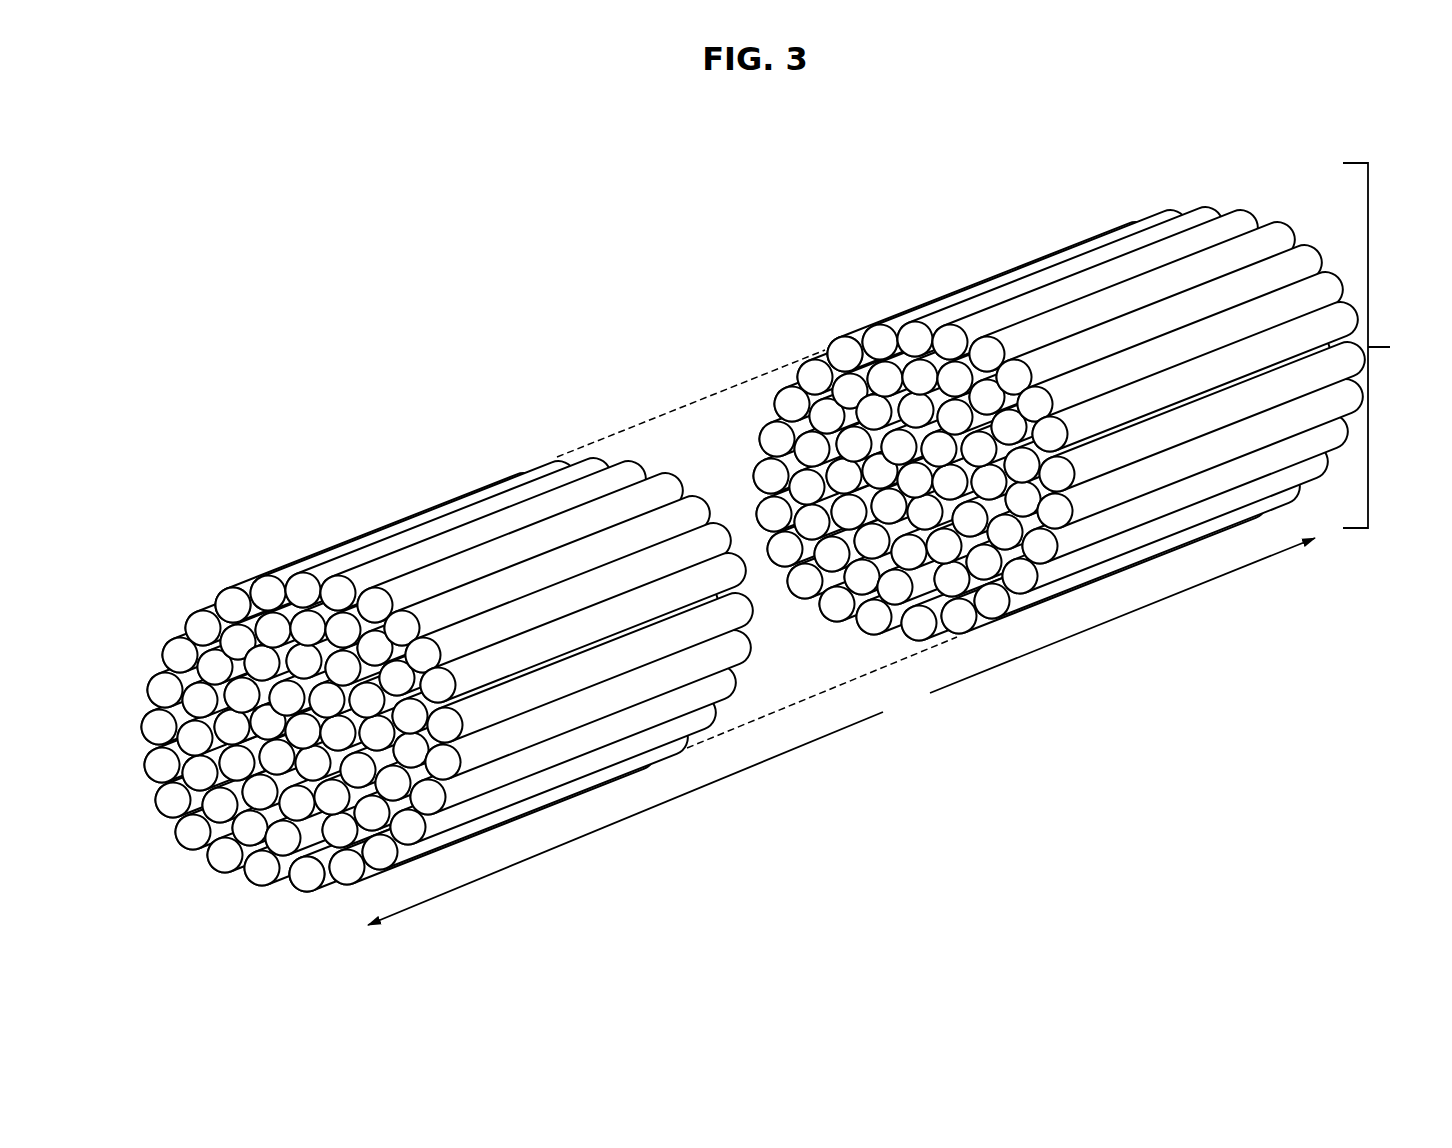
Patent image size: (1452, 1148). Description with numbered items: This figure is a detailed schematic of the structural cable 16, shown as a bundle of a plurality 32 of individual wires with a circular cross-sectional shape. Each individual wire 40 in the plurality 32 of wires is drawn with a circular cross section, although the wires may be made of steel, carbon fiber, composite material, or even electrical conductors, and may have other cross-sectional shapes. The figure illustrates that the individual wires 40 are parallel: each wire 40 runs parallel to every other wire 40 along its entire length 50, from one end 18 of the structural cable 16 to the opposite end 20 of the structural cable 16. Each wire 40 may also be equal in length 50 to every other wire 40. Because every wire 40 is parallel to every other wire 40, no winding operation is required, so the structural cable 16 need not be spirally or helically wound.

The structural cable 16 is at (753, 539).
The one end 18 is at (236, 899).
The opposite end 20 is at (1229, 194).
The plurality of wires 32 is at (1385, 345).
The individual wire 40 is at (232, 605).
The length 50 is at (1097, 628).